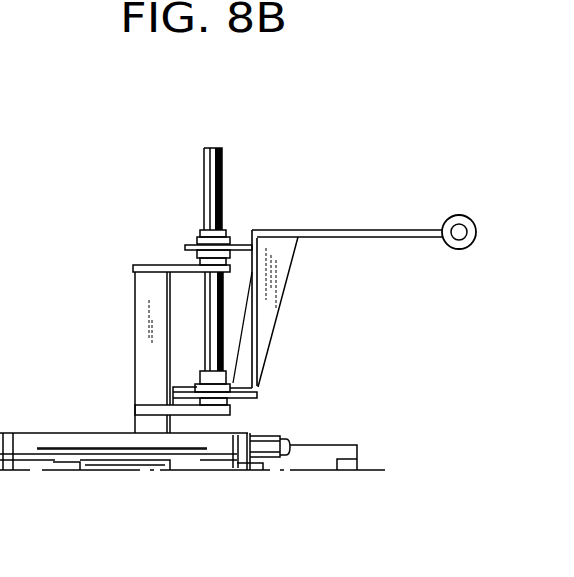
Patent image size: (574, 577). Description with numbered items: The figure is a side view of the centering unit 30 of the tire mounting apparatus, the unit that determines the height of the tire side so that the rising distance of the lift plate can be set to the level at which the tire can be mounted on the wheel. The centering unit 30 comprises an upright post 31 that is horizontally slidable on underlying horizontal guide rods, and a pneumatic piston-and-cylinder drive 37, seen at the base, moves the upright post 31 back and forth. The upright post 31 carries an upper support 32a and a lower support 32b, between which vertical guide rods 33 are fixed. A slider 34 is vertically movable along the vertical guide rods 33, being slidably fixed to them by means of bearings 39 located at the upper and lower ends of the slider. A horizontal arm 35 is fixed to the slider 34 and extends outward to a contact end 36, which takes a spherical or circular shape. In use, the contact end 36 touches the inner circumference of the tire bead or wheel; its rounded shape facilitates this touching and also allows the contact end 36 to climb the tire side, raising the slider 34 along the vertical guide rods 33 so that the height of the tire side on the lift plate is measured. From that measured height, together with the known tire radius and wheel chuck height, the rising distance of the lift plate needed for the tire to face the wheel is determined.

The centering unit 30 is at (297, 187).
The upright post 31 is at (145, 310).
The support 32a is at (178, 268).
The support 32b is at (188, 408).
The vertical guide rods 33 is at (223, 164).
The slider 34 is at (280, 286).
The horizontal arm 35 is at (373, 238).
The contact end 36 is at (450, 222).
The pneumatic piston-and-cylinder drive 37 is at (50, 453).
The bearings 39 is at (198, 243).